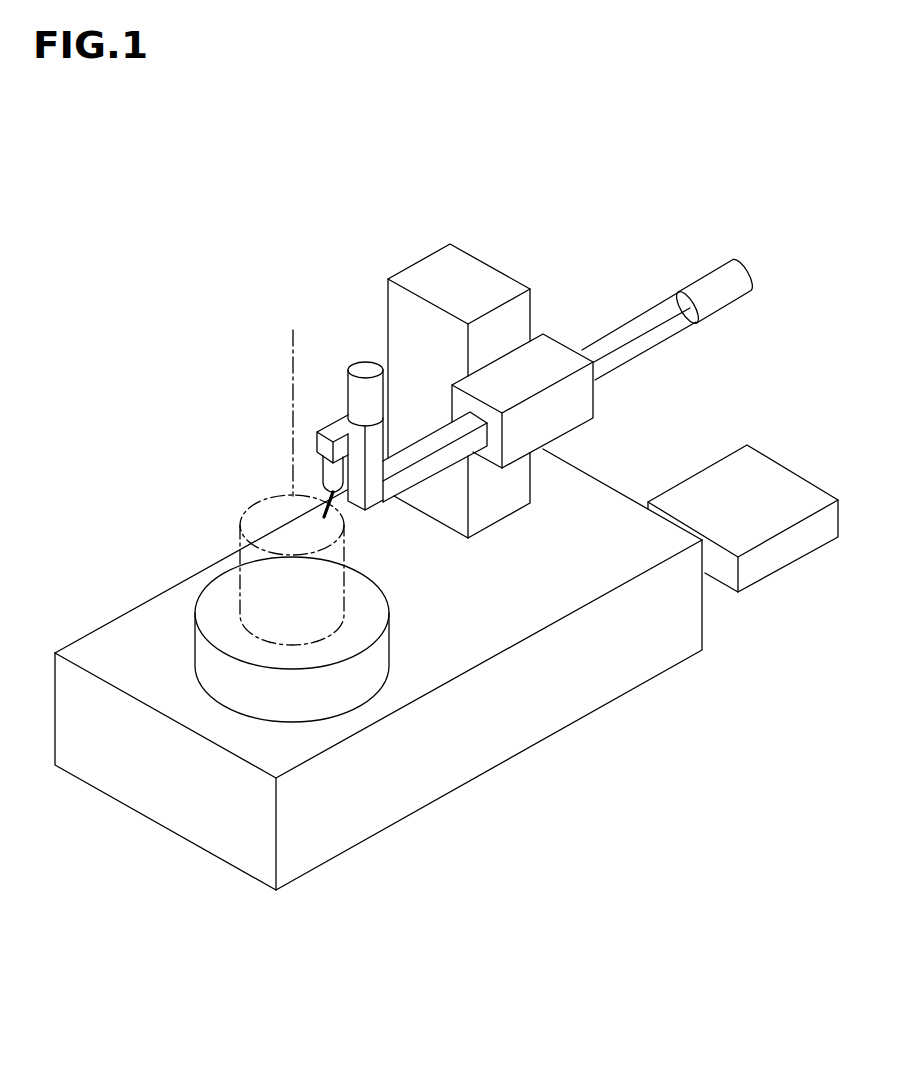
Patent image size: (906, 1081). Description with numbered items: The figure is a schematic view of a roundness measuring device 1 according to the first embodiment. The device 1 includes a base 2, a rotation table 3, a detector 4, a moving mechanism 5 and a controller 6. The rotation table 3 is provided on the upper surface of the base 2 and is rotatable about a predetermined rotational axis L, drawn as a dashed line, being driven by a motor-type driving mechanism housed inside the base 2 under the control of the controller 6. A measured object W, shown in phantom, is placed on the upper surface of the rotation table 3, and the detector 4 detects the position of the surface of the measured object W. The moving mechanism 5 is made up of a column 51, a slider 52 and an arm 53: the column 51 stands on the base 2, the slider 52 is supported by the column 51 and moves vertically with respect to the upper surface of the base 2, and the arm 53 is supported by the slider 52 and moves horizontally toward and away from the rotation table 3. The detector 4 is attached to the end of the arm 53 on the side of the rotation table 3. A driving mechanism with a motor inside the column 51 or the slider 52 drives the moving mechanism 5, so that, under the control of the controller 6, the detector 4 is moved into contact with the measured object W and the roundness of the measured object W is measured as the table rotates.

The roundness measuring device 1 is at (412, 175).
The base 2 is at (467, 772).
The rotation table 3 is at (222, 603).
The detector 4 is at (323, 473).
The moving mechanism 5 is at (580, 236).
The column 51 is at (467, 265).
The slider 52 is at (550, 347).
The arm 53 is at (642, 348).
The controller 6 is at (793, 548).
The measured object W is at (238, 531).
The rotational axis L is at (290, 350).